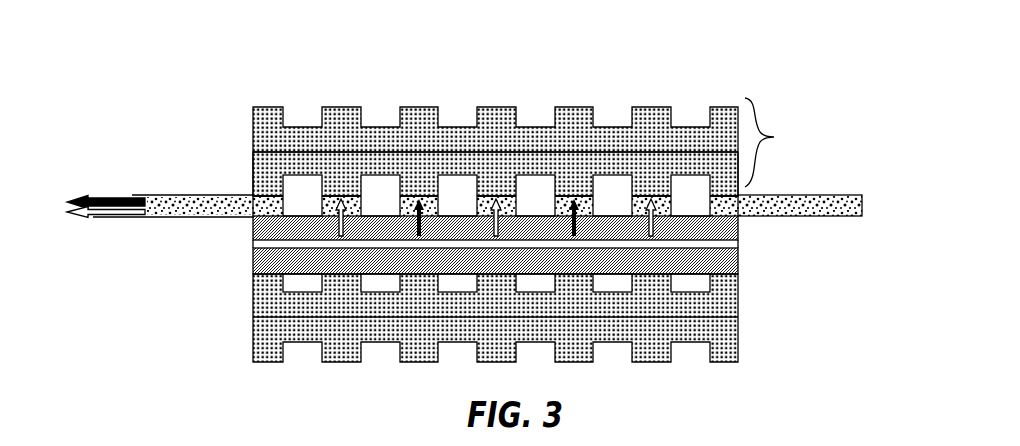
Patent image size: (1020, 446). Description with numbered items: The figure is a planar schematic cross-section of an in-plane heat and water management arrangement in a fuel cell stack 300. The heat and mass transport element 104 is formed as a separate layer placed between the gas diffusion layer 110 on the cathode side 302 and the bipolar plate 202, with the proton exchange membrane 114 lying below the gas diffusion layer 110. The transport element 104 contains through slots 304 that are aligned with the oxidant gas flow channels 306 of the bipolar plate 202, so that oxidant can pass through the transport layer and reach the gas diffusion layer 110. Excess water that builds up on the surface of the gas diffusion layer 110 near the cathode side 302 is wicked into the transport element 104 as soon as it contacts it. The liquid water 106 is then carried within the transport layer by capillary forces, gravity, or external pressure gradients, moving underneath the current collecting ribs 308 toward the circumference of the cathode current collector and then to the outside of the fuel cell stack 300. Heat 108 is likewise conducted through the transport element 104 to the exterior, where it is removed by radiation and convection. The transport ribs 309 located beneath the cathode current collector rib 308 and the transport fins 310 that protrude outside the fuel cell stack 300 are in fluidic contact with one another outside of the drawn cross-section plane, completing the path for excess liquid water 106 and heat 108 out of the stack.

The fuel cell stack 300 is at (186, 78).
The cathode side 302 is at (253, 153).
The through slots 304 is at (283, 206).
The oxidant gas flow channels 306 is at (253, 188).
The current collecting ribs 308 is at (337, 195).
The transport ribs 309 is at (364, 205).
The transport fins 310 is at (808, 193).
The water 106 is at (89, 196).
The heat 108 is at (90, 217).
The gas diffusion layer 110 is at (740, 232).
The proton exchange membrane 114 is at (740, 248).
The bipolar plate 202 is at (774, 137).
The heat and mass transport element 104 is at (780, 182).